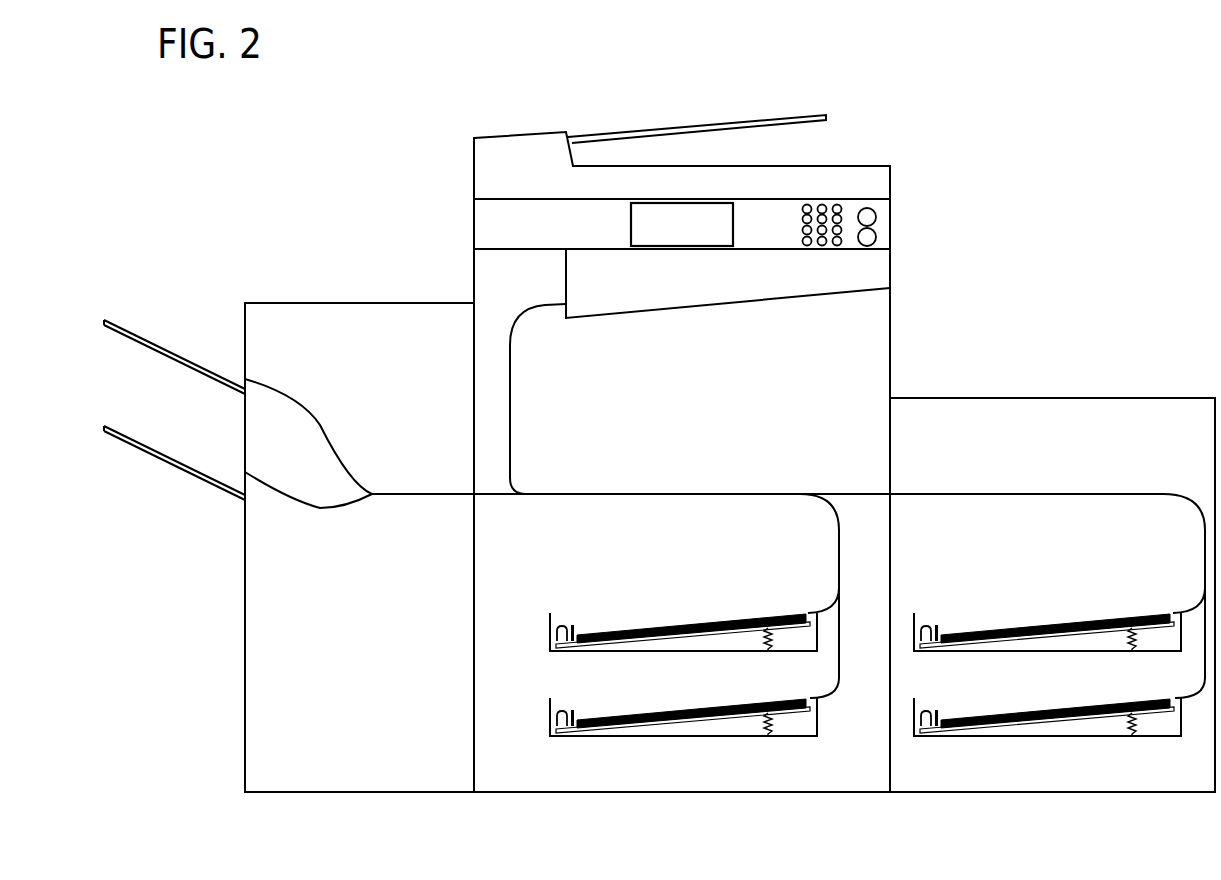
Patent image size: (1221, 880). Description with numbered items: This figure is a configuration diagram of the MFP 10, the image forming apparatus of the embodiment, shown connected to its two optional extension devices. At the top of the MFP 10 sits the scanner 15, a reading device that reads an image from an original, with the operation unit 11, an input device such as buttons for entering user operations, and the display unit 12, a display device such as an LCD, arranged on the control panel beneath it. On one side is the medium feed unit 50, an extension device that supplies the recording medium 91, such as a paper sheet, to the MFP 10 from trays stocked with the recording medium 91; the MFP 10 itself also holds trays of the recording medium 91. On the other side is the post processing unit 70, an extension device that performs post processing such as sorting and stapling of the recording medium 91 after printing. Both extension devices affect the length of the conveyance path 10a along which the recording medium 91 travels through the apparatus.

The MFP 10 is at (883, 104).
The conveyance path 10a is at (838, 492).
The operation unit 11 is at (874, 213).
The display unit 12 is at (683, 226).
The scanner 15 is at (612, 178).
The medium feed unit 50 is at (1172, 412).
The post processing unit 70 is at (332, 322).
The recording medium 91 is at (631, 637).